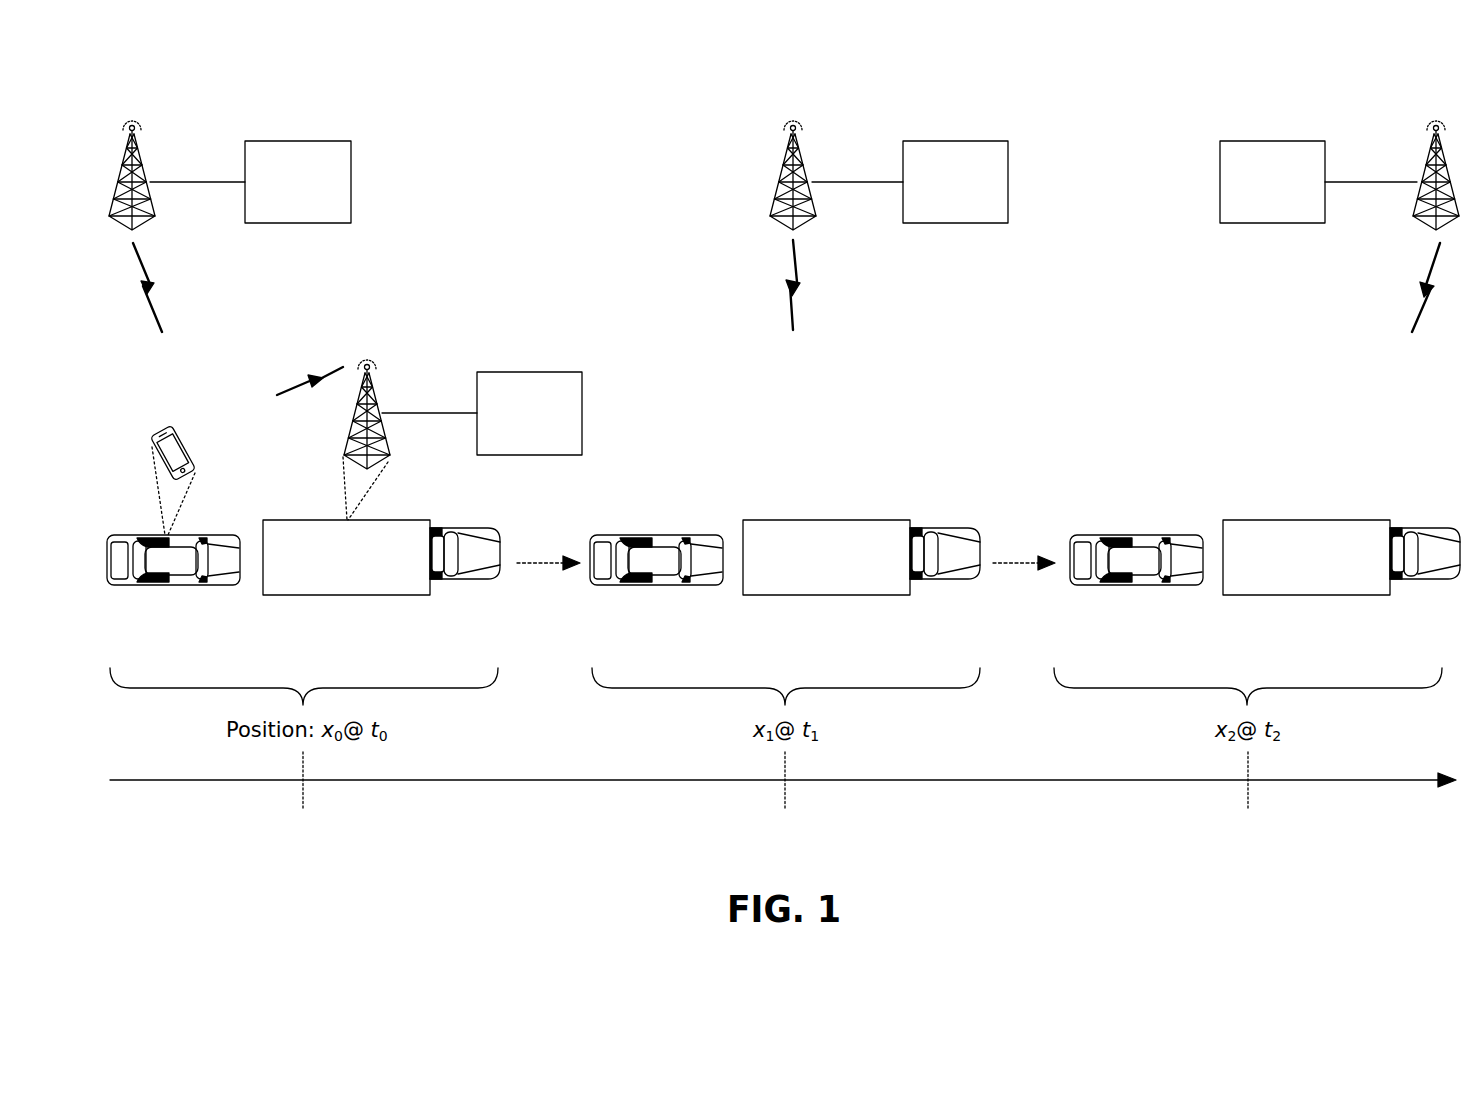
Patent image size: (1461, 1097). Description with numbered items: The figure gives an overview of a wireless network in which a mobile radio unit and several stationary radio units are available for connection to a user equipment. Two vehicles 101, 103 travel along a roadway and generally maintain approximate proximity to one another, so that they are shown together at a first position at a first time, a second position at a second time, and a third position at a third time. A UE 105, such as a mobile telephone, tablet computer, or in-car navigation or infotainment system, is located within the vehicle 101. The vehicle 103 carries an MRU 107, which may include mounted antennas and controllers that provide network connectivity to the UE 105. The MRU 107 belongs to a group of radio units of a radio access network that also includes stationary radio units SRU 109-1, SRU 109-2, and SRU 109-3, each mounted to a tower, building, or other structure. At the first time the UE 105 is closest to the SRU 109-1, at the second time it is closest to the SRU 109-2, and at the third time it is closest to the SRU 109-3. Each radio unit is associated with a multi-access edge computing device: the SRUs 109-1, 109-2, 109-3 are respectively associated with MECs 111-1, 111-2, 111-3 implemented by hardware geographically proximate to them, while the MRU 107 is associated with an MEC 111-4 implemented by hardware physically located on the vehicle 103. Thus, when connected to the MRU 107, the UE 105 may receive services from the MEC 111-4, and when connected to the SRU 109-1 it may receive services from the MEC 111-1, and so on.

The vehicle 101 is at (655, 590).
The vehicle 103 is at (861, 587).
The UE 105 is at (195, 452).
The mobile radio unit 107 is at (377, 367).
The stationary radio unit 109-1 is at (143, 131).
The stationary radio unit 109-2 is at (805, 131).
The stationary radio unit 109-3 is at (1423, 131).
The MEC 111-1 is at (327, 209).
The MEC 111-2 is at (984, 209).
The MEC 111-3 is at (1301, 209).
The MEC 111-4 is at (558, 441).